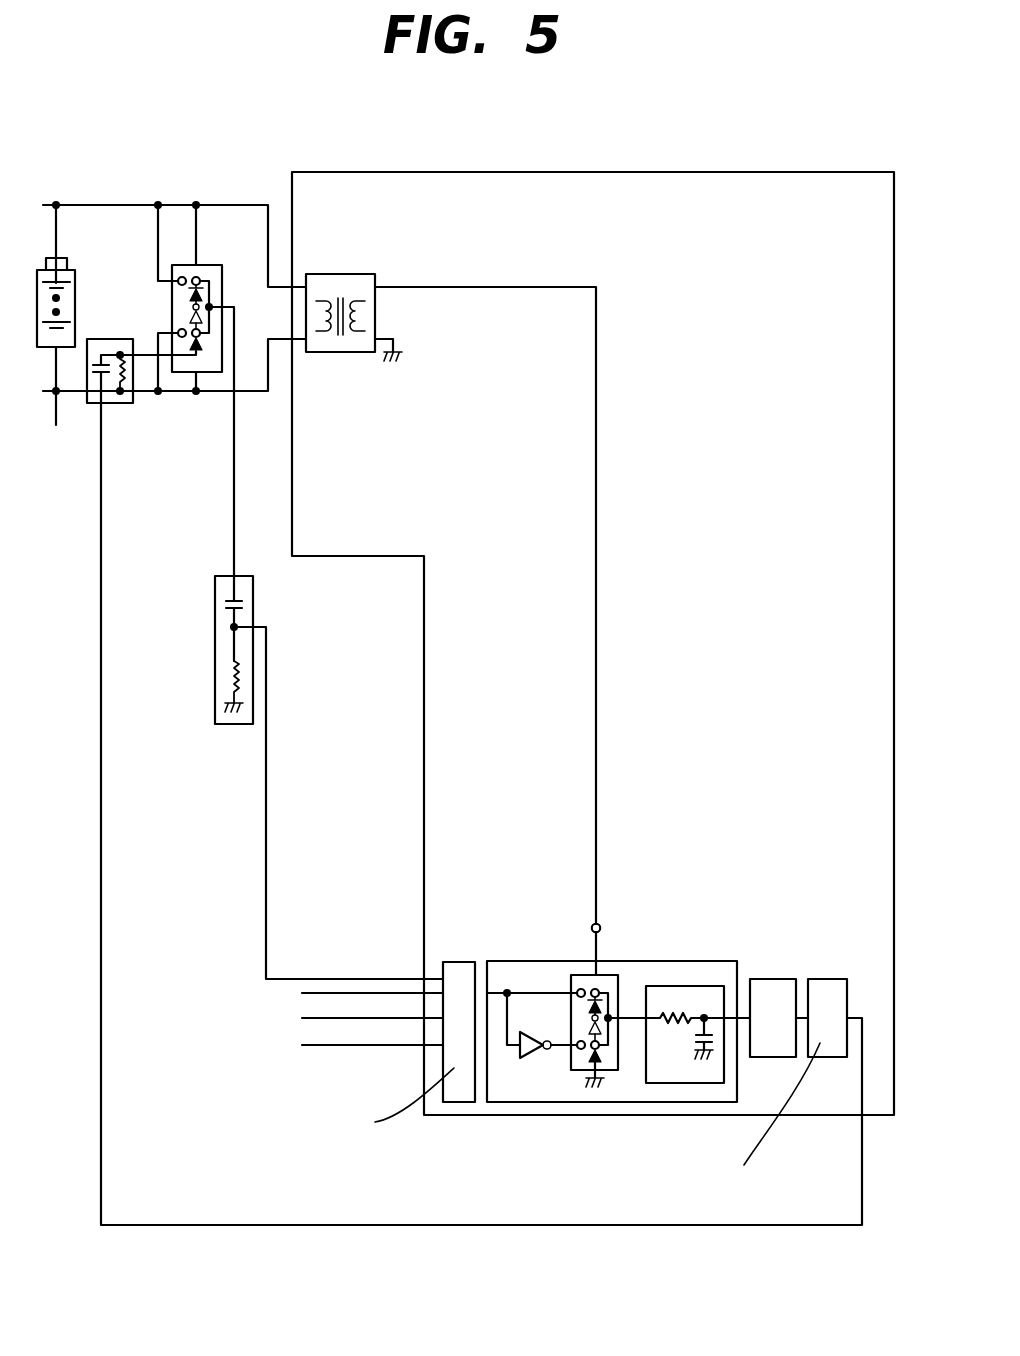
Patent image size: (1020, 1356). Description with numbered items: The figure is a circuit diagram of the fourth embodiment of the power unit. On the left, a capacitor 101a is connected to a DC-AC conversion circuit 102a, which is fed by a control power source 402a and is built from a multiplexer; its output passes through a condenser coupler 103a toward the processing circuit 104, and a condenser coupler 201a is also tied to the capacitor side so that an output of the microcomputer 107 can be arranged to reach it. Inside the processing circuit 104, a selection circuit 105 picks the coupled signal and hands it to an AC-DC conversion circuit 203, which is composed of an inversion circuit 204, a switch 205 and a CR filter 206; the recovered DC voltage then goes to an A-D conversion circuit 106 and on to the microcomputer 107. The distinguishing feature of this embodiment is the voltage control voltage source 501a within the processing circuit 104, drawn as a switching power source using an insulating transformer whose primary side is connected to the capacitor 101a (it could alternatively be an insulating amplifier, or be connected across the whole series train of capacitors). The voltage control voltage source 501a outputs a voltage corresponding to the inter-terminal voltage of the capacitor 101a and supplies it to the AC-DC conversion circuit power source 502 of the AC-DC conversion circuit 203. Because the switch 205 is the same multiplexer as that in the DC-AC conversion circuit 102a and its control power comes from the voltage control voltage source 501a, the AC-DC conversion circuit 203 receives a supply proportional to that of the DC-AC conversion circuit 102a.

The capacitor 101a is at (77, 277).
The DC-AC conversion circuit 102a is at (222, 264).
The condenser coupler 103a is at (215, 633).
The processing circuit 104 is at (372, 172).
The selection circuit 105 is at (457, 962).
The A-D conversion circuit 106 is at (768, 979).
The microcomputer 107 is at (832, 979).
The condenser coupler 201a is at (105, 339).
The AC-DC conversion circuit 203 is at (527, 962).
The inversion circuit 204 is at (527, 1060).
The switch 205 is at (618, 975).
The CR filter 206 is at (700, 986).
The control power source 402a is at (198, 222).
The voltage control voltage source 501a is at (340, 274).
The AC-DC conversion circuit power source 502 is at (597, 924).